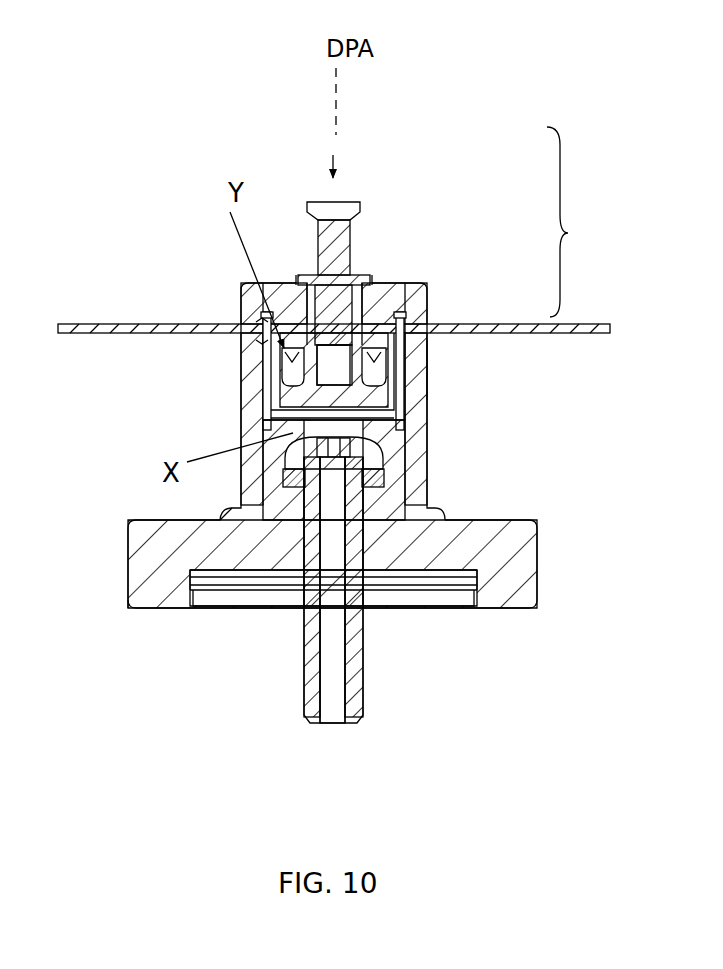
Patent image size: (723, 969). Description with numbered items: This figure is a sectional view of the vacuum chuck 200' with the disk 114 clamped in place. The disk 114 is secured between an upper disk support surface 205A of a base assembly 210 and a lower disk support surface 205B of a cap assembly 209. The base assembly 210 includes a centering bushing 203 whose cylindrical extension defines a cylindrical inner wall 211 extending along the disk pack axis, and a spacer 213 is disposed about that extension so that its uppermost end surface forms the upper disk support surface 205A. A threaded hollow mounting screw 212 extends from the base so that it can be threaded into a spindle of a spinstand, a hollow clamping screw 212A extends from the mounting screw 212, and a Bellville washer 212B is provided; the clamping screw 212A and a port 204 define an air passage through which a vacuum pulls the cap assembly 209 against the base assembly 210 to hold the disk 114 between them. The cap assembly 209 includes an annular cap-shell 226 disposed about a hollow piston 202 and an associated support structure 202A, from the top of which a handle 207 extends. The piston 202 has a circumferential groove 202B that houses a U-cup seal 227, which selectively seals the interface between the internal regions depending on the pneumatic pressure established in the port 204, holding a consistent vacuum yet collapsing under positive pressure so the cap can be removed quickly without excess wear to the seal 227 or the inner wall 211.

The handle 207 is at (336, 200).
The cap-shell 226 is at (404, 276).
The spacer 213 is at (421, 363).
The disk 114 is at (582, 322).
The piston 202 is at (284, 397).
The support structure 202A is at (361, 322).
The circumferential groove 202B is at (369, 349).
The cylindrical inner wall 211 is at (275, 341).
The seal 227 is at (398, 373).
The upper disk support surface 205A is at (248, 340).
The lower disk support surface 205B is at (246, 322).
The clamping screw 212A is at (374, 453).
The Bellville washer 212B is at (381, 482).
The base assembly 210 is at (608, 355).
The centering bushing 203 is at (494, 612).
The mounting screw 212 is at (362, 672).
The port 204 is at (330, 653).
The cap assembly 209 is at (589, 222).
The vacuum chuck 200' is at (635, 111).